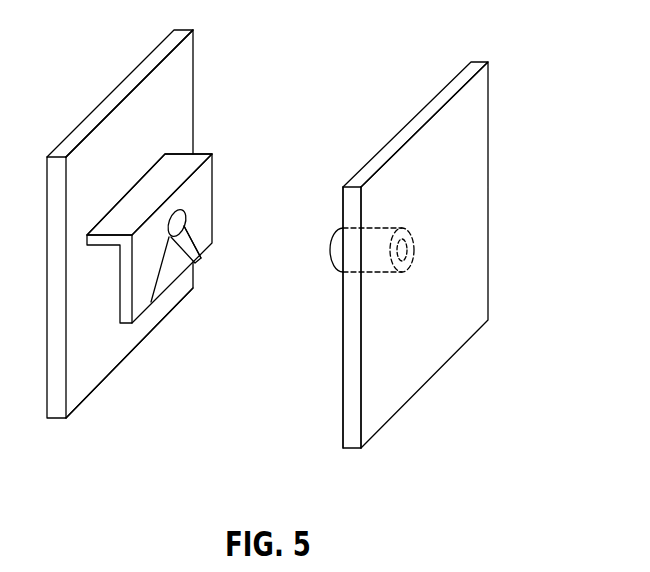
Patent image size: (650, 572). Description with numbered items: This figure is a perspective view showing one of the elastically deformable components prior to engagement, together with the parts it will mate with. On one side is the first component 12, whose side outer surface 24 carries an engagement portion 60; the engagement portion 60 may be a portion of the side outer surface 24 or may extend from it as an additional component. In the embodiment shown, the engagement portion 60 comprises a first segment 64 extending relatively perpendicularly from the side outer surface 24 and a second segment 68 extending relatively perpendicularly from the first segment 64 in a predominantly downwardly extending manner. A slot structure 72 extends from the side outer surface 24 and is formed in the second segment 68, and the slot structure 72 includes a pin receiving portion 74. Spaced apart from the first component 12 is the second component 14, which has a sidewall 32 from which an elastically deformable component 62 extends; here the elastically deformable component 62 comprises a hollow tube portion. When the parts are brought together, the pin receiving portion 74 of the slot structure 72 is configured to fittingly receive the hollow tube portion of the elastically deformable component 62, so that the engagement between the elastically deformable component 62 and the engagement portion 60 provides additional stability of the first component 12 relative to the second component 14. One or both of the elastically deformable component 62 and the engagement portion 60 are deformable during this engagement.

The first component 12 is at (122, 70).
The second component 14 is at (505, 260).
The side outer surface 24 is at (175, 67).
The sidewall 32 is at (343, 396).
The engagement portion 60 is at (214, 152).
The elastically deformable component 62 is at (322, 223).
The first segment 64 is at (176, 160).
The second segment 68 is at (144, 293).
The slot structure 72 is at (176, 255).
The pin receiving portion 74 is at (197, 244).